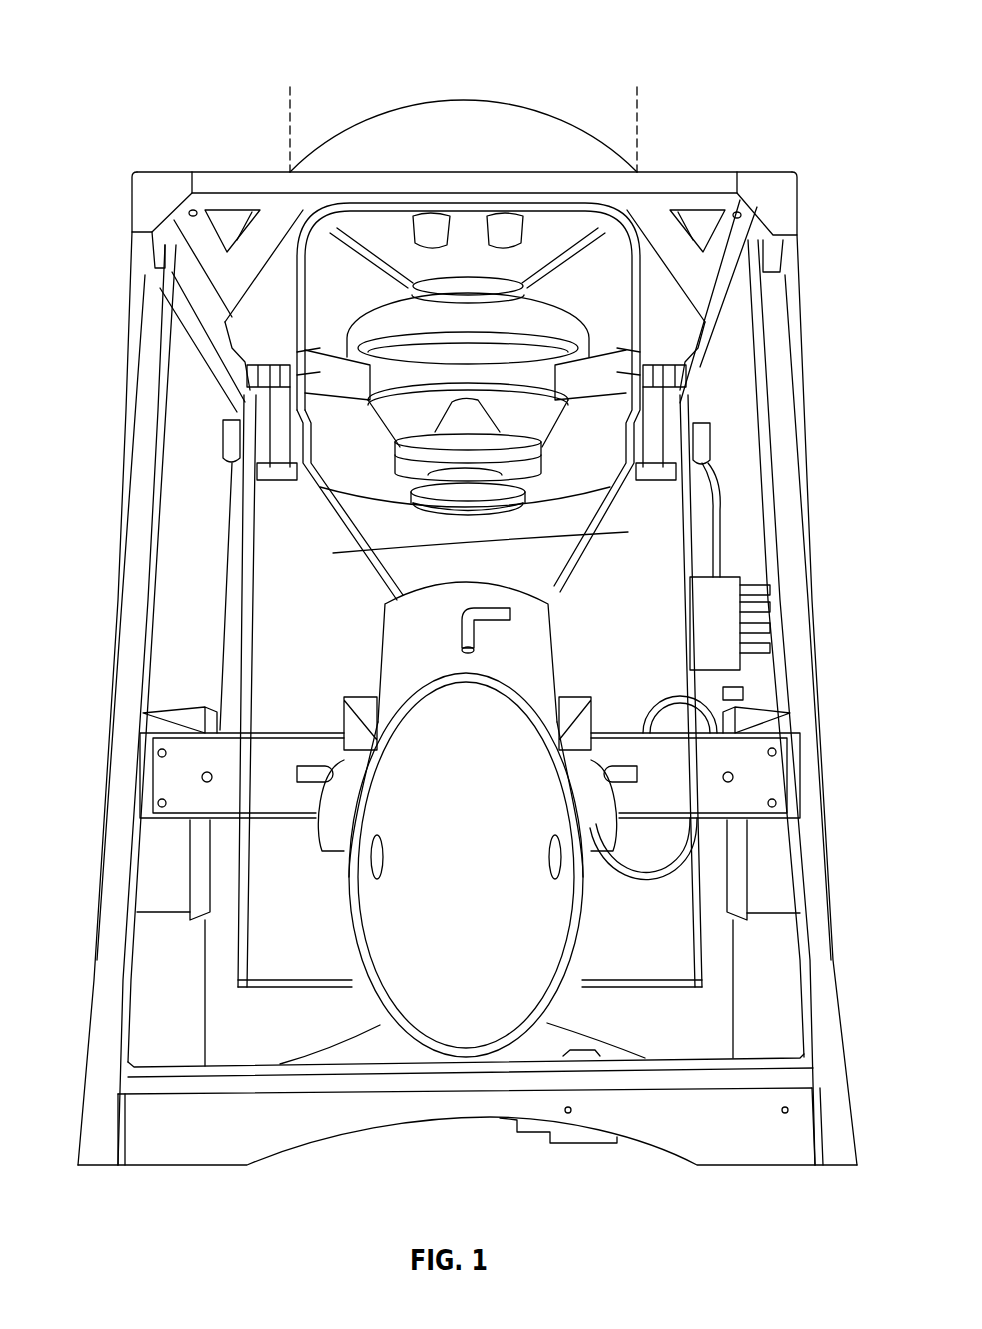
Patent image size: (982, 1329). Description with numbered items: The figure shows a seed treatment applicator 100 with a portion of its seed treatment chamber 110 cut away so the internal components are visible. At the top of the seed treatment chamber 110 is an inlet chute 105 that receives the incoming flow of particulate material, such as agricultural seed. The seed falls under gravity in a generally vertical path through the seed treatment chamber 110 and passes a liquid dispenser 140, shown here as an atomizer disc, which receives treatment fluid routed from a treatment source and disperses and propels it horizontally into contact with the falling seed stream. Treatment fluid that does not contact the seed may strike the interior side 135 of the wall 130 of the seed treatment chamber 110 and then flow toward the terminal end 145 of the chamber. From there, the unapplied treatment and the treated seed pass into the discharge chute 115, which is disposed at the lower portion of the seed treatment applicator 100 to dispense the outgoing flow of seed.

The seed treatment applicator 100 is at (138, 44).
The inlet chute 105 is at (552, 104).
The seed treatment chamber 110 is at (637, 87).
The discharge chute 115 is at (587, 671).
The wall 130 is at (573, 557).
The interior side 135 is at (575, 533).
The liquid dispenser 140 is at (427, 495).
The terminal end 145 is at (383, 621).